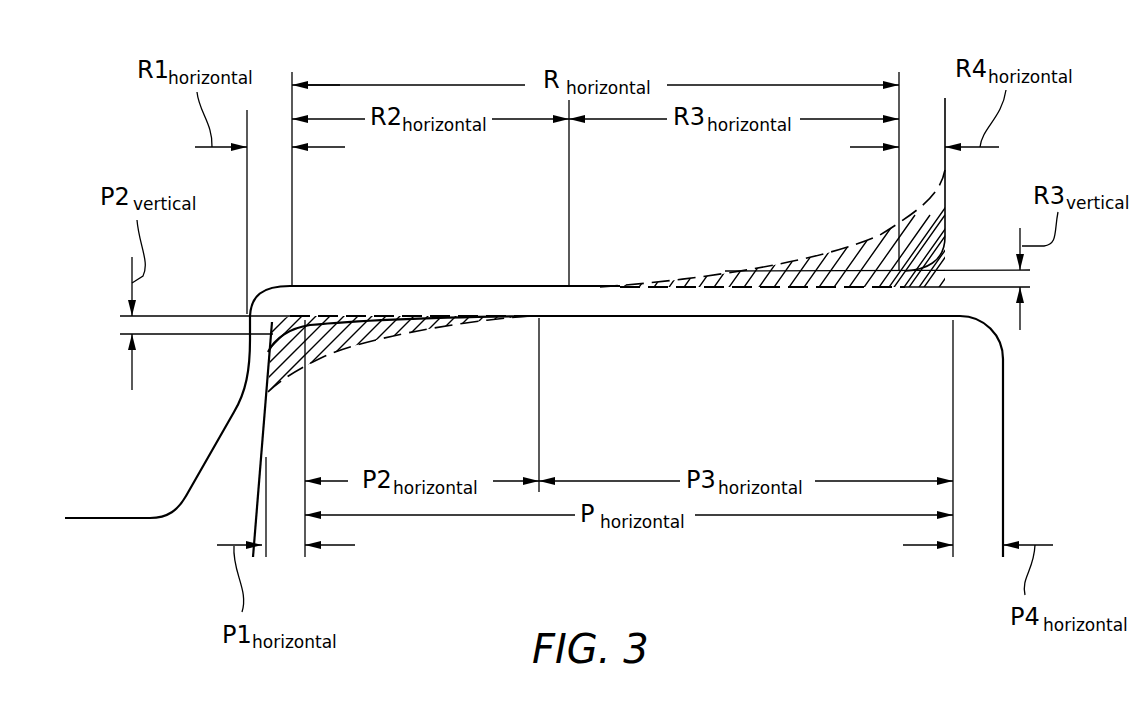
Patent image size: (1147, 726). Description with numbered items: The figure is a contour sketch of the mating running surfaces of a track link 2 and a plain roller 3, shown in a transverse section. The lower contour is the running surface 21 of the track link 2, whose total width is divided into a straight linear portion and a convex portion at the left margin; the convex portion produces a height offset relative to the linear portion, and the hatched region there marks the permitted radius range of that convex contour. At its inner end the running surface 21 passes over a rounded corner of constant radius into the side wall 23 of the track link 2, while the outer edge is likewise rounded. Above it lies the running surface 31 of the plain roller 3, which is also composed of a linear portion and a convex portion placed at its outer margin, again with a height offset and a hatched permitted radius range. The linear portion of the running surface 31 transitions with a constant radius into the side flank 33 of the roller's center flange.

The track link 2 is at (1022, 376).
The plain roller 3 is at (1040, 156).
The running surface 21 is at (824, 318).
The side wall 23 is at (263, 437).
The running surface 31 is at (483, 286).
The side flank 33 is at (240, 387).